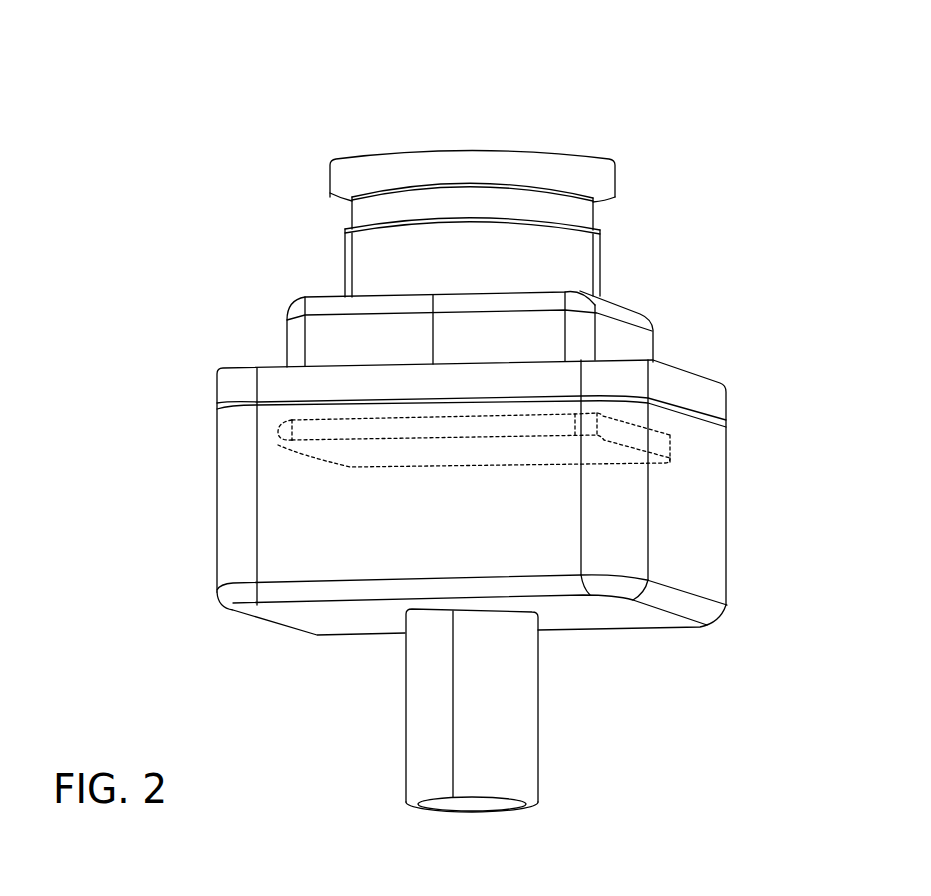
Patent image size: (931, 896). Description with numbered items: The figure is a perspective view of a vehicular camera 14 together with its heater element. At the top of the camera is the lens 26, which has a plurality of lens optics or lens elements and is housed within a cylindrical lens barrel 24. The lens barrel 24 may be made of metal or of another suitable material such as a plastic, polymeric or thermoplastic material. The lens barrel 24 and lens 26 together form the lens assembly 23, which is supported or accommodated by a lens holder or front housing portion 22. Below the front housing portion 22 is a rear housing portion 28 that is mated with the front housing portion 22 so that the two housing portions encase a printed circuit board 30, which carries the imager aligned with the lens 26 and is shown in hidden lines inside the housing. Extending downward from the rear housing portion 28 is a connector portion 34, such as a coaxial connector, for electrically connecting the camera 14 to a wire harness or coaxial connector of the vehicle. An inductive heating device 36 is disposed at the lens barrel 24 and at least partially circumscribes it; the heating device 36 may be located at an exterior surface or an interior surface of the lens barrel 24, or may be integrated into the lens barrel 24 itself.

The camera 14 is at (688, 79).
The front housing portion 22 is at (653, 350).
The lens assembly 23 is at (634, 194).
The lens barrel 24 is at (352, 216).
The lens 26 is at (517, 134).
The rear housing portion 28 is at (228, 522).
The printed circuit board 30 is at (665, 442).
The connector portion 34 is at (418, 735).
The inductive heating device 36 is at (573, 275).